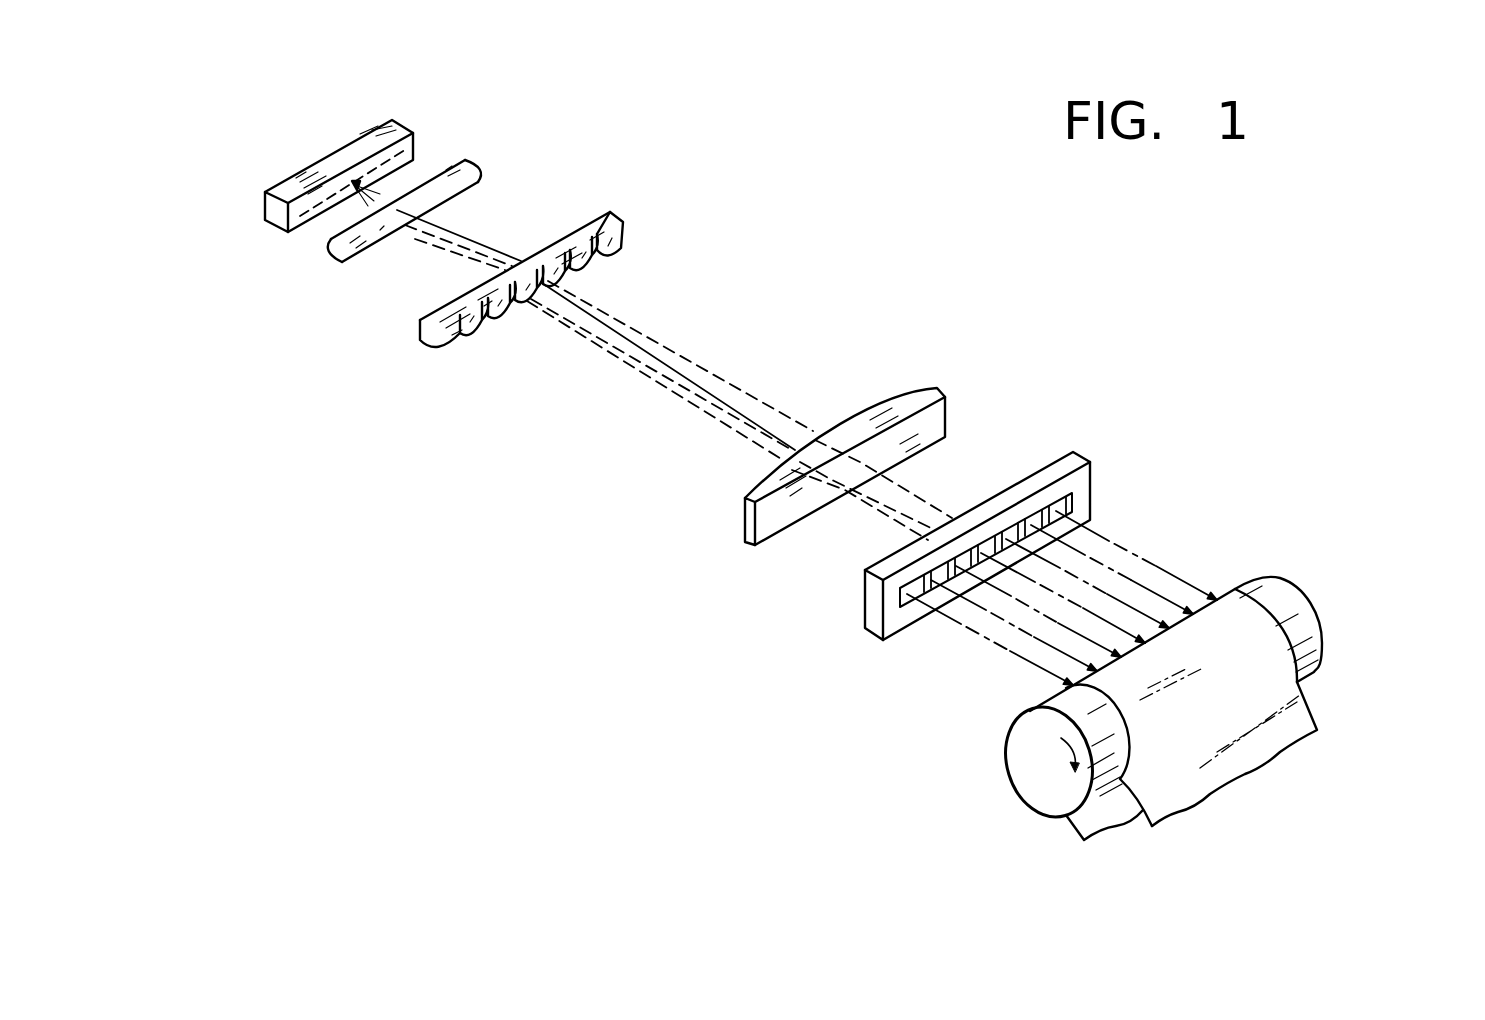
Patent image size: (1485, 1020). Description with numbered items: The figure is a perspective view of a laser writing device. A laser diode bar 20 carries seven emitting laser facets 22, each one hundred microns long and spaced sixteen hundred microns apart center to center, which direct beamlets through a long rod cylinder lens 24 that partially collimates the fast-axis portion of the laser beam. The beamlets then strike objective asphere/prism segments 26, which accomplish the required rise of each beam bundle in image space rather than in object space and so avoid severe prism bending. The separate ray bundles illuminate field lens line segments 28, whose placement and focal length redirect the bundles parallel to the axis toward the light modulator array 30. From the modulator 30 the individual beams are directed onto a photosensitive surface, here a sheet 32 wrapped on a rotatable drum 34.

The laser diode bar 20 is at (407, 127).
The laser facets 22 is at (300, 218).
The rod lens 24 is at (478, 172).
The objective asphere/prism segments 26 is at (623, 219).
The field lens line segments 28 is at (943, 390).
The modulator 30 is at (1083, 452).
The sheet 32 is at (1297, 715).
The rotatable drum 34 is at (1010, 748).